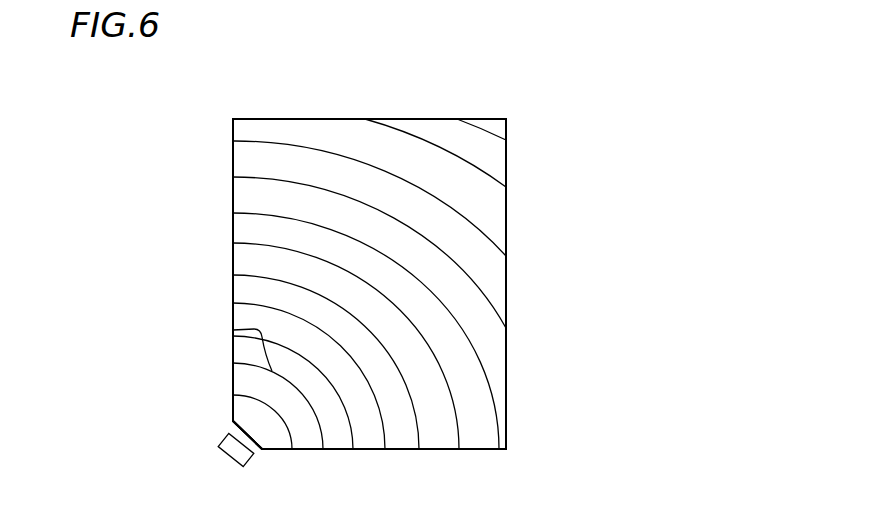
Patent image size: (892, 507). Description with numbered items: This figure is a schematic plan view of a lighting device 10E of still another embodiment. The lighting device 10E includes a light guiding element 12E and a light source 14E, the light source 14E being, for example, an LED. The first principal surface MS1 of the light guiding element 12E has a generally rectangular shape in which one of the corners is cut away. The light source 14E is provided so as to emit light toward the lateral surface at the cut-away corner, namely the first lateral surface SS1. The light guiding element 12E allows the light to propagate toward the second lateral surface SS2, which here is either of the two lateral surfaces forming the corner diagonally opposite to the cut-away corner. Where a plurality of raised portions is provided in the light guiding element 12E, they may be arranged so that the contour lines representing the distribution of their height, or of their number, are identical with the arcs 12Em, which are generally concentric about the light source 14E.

The lighting device 10E is at (617, 138).
The light guiding element 12E is at (506, 367).
The arcs 12Em is at (231, 331).
The light source 14E is at (230, 450).
The first lateral surface SS1 is at (234, 424).
The second lateral surface SS2 is at (425, 119).
The first principal surface MS1 is at (436, 418).